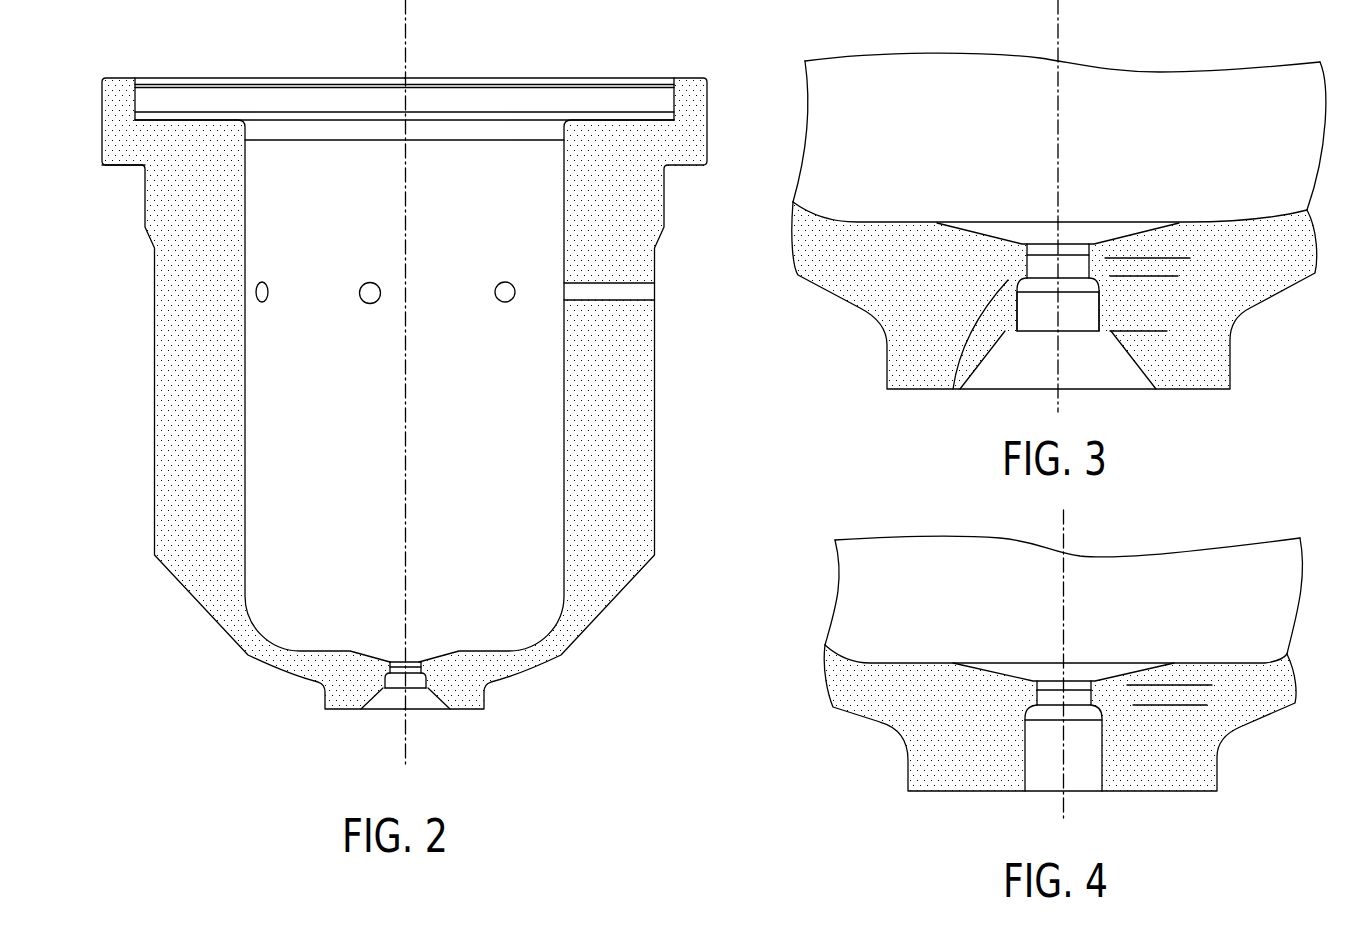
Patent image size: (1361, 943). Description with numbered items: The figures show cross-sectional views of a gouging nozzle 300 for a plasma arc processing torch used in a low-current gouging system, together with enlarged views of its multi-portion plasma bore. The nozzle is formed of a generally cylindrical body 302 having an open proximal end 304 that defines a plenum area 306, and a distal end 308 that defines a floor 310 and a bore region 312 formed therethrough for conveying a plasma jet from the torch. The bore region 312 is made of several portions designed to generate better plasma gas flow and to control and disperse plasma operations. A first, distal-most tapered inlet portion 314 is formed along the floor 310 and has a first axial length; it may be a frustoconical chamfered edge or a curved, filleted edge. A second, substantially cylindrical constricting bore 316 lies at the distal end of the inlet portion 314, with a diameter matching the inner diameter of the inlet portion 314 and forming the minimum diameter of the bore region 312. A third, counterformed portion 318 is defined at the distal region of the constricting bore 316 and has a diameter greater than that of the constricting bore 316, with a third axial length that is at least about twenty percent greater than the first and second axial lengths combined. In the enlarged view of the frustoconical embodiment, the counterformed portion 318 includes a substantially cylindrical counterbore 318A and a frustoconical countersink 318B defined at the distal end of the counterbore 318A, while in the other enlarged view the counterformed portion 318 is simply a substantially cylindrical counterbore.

In FIG. 2, the gouging nozzle 300 is at (205, 723).
In FIG. 2, the generally cylindrical body 302 is at (170, 348).
In FIG. 2, the open proximal end 304 is at (90, 141).
In FIG. 2, the plenum area 306 is at (514, 158).
In FIG. 2, the distal end 308 is at (308, 699).
In FIG. 2, the floor 310 is at (532, 661).
In FIG. 2, the bore region 312 is at (383, 611).
In FIG. 3, the bore region 312 is at (903, 91).
In FIG. 3, the tapered inlet portion 314 is at (1008, 217).
In FIG. 4, the tapered inlet portion 314 is at (991, 649).
In FIG. 3, the constricting bore 316 is at (1020, 265).
In FIG. 4, the constricting bore 316 is at (1030, 694).
In FIG. 3, the counterformed portion 318 is at (957, 319).
In FIG. 4, the counterformed portion 318 is at (1018, 751).
In FIG. 3, the substantially cylindrical counterbore 318A is at (1117, 314).
In FIG. 3, the frustoconical countersink 318B is at (1165, 377).